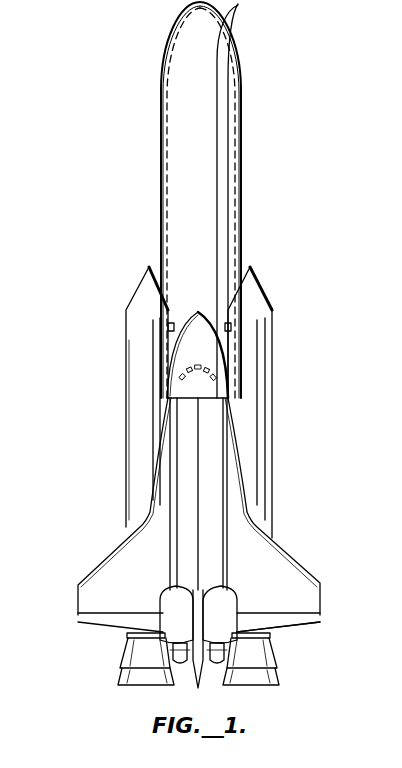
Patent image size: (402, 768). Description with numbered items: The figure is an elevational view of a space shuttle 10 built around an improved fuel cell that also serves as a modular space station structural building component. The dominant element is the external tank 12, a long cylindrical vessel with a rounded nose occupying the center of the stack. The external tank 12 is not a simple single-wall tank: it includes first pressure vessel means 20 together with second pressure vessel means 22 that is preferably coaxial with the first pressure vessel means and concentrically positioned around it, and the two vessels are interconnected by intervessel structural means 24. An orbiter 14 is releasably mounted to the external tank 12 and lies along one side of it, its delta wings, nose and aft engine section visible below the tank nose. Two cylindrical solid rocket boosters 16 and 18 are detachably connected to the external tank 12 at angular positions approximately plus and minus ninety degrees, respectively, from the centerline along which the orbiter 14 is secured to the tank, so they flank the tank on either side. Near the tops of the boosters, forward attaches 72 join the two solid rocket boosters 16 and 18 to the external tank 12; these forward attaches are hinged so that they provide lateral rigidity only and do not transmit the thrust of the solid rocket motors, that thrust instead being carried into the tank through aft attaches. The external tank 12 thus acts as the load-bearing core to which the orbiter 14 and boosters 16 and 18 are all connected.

The space shuttle 10 is at (212, 345).
The external tank 12 is at (195, 200).
The orbiter 14 is at (213, 480).
The solid rocket booster 16 is at (138, 388).
The solid rocket booster 18 is at (258, 388).
The first pressure vessel means 20 is at (207, 108).
The second pressure vessel means 22 is at (240, 127).
The intervessel structural means 24 is at (318, 614).
The forward attaches 72 is at (227, 323).